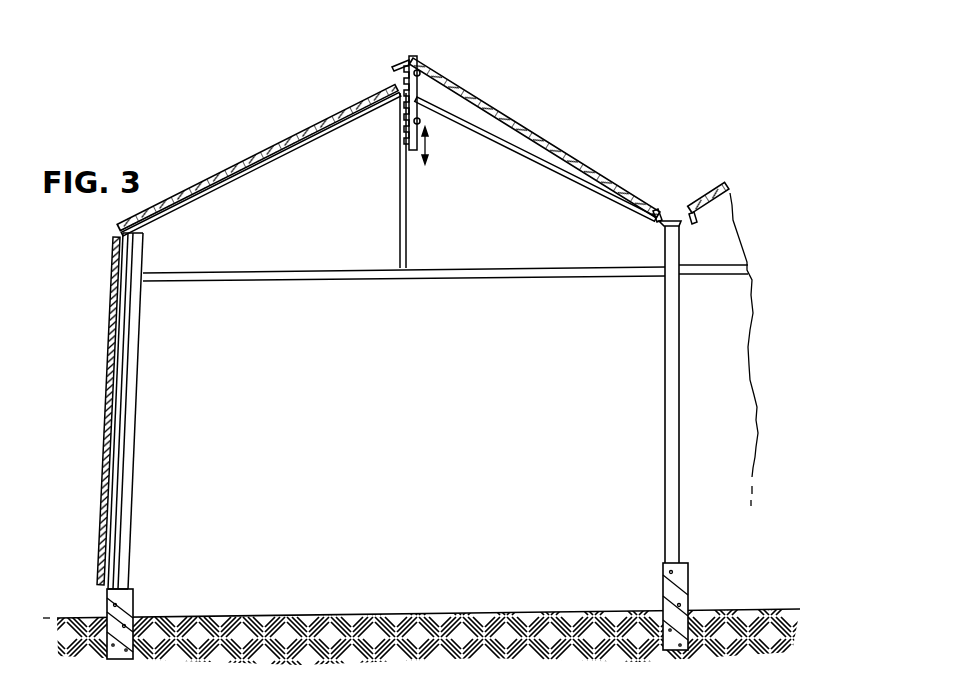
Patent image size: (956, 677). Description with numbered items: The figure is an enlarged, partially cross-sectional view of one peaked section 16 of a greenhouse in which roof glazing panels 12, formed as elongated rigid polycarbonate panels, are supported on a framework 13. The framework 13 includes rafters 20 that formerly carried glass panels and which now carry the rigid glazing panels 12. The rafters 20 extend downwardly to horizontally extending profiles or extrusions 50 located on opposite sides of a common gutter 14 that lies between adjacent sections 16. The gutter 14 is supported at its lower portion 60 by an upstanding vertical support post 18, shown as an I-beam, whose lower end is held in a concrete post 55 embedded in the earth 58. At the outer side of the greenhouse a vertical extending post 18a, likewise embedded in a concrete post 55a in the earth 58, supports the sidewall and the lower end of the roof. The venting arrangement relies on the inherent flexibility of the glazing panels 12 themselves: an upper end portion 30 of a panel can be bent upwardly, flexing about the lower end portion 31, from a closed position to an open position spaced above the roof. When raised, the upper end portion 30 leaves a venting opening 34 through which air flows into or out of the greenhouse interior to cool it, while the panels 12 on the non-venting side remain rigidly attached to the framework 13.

The roof glazing panels 12 is at (228, 173).
The framework 13 is at (449, 198).
The gutter 14 is at (667, 220).
The peak greenhouse sections 16 is at (529, 100).
The vertical support posts 18 is at (665, 370).
The vertical extending posts 18a is at (133, 452).
The rafters 20 is at (270, 165).
The upper end portion 30 is at (358, 110).
The lower end portion 31 is at (641, 196).
The venting opening 34 is at (390, 74).
The horizontally extending profiles 50 is at (657, 218).
The concrete post 55 is at (686, 577).
The concrete posts 55a is at (134, 600).
The earth 58 is at (290, 615).
The lower portion 60 is at (103, 424).